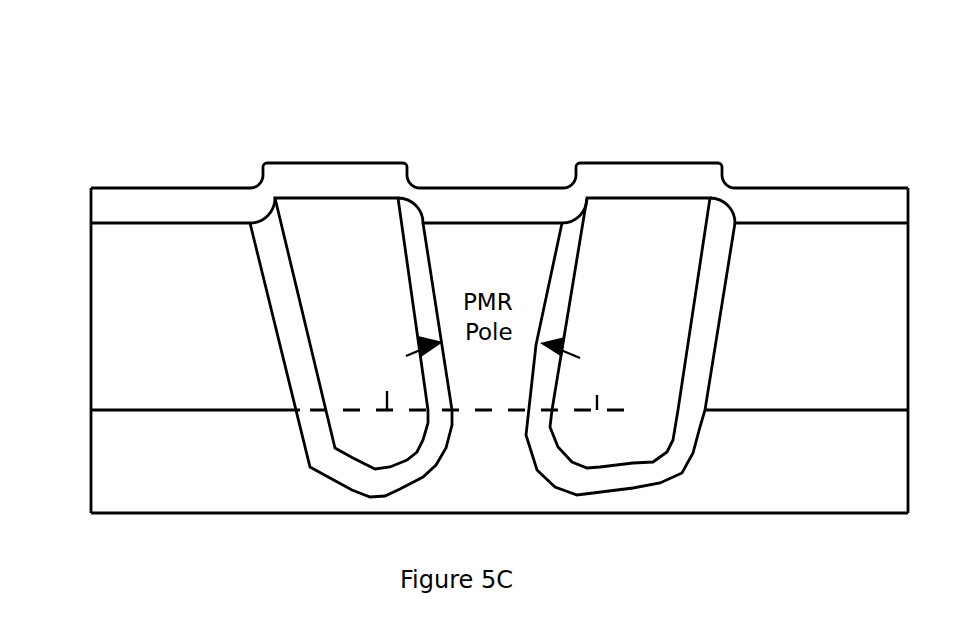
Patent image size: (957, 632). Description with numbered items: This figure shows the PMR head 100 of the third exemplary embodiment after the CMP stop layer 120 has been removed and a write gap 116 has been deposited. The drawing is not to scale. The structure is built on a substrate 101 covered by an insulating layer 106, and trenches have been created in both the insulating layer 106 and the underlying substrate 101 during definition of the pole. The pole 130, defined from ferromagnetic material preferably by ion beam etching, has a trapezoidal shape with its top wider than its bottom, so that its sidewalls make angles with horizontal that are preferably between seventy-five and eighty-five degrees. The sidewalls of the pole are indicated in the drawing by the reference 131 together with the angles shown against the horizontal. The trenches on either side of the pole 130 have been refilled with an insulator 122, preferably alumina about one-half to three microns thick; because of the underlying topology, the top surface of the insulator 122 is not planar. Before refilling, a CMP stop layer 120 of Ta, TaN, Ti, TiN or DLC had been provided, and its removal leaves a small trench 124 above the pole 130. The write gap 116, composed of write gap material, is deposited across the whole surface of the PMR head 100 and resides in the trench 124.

The PMR head 100 is at (487, 35).
The pole 130 is at (422, 97).
The trench 124 is at (479, 150).
The insulator 122 is at (320, 196).
The CMP stop layer 120 is at (257, 219).
The write gap 116 is at (90, 205).
The insulating layer 106 is at (90, 393).
The substrate 101 is at (90, 497).
The sidewall of the PMR pole 131 is at (440, 315).